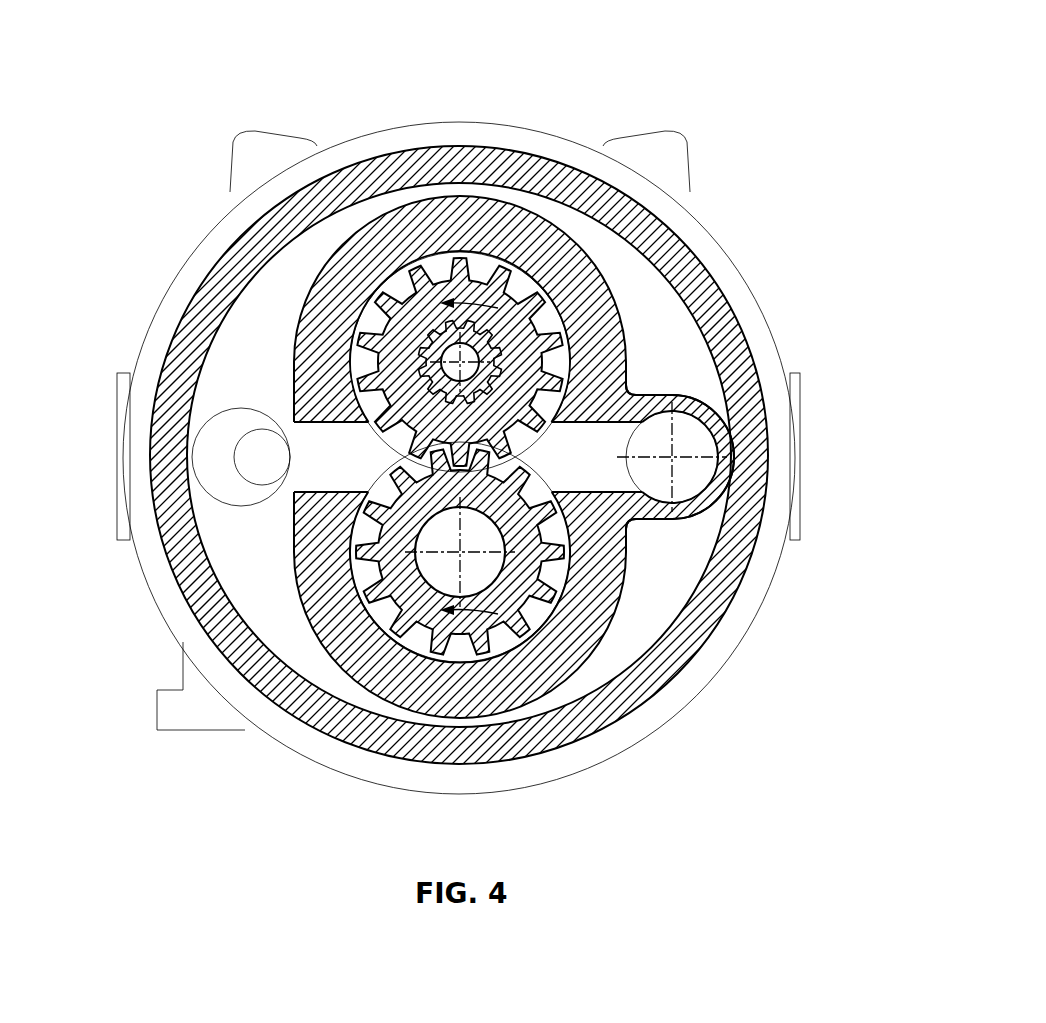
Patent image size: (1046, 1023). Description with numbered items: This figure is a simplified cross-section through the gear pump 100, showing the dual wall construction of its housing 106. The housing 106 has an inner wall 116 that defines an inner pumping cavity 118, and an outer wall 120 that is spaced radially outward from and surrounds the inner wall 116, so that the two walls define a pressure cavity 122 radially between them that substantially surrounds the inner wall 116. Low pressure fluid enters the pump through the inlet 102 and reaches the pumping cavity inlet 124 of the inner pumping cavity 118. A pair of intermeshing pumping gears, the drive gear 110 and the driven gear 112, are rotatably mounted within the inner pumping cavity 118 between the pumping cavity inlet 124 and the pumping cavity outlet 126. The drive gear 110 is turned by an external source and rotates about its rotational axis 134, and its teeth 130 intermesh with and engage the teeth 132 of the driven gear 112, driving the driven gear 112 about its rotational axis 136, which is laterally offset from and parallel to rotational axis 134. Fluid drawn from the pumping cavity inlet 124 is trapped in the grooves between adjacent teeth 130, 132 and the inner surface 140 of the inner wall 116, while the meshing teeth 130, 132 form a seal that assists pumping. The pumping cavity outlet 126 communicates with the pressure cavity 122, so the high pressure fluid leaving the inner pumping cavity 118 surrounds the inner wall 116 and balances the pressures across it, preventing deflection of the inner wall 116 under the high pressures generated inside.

The gear pump 100 is at (770, 47).
The inlet 102 is at (698, 443).
The housing 106 is at (775, 210).
The drive gear 110 is at (592, 318).
The driven gear 112 is at (541, 588).
The inner wall 116 is at (572, 262).
The inner pumping cavity 118 is at (350, 440).
The outer wall 120 is at (457, 165).
The pressure cavity 122 is at (226, 516).
The pumping cavity inlet 124 is at (625, 478).
The pumping cavity outlet 126 is at (288, 470).
The teeth 130 is at (635, 382).
The teeth 132 is at (637, 527).
The rotational axis 134 is at (410, 303).
The rotational axis 136 is at (408, 612).
The inner surface 140 is at (532, 285).